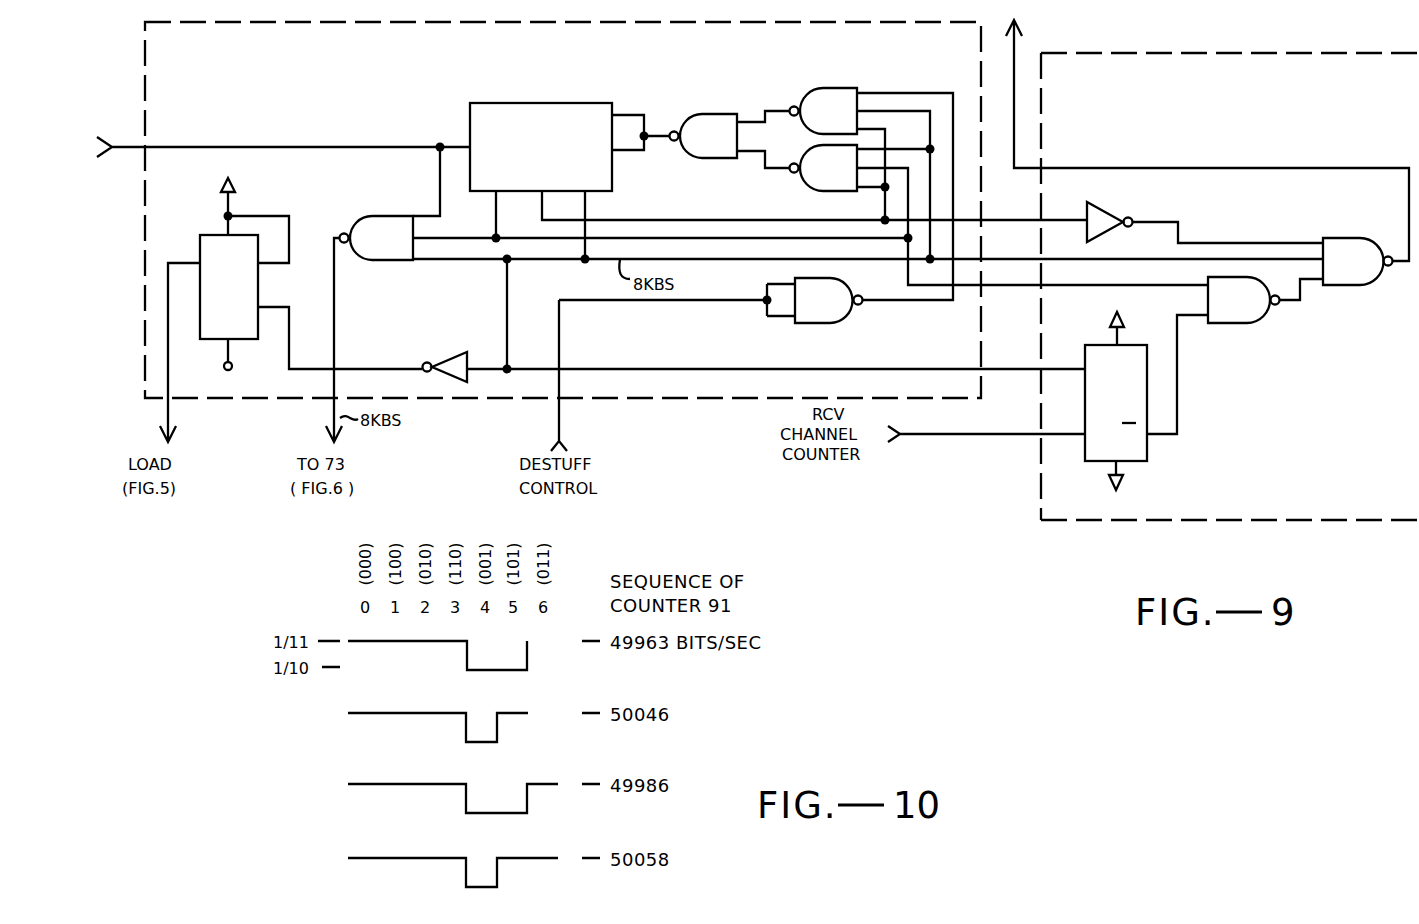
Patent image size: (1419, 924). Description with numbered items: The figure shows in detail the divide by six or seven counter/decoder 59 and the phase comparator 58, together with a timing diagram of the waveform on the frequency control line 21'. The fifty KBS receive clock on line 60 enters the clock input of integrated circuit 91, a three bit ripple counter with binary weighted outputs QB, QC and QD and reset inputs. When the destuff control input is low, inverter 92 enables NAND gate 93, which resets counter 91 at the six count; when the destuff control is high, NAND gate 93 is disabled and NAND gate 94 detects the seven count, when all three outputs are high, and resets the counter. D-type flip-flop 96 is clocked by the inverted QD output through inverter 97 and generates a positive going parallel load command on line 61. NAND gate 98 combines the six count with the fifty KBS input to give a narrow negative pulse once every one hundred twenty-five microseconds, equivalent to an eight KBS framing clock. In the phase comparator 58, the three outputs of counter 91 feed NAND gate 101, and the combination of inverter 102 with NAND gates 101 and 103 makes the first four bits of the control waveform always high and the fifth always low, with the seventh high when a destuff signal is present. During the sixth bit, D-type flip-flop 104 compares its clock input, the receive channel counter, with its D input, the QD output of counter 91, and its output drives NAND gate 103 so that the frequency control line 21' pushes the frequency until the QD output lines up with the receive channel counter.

The divide by 6 or 7 counter/decoder 59 is at (661, 398).
The phase comparator 58 is at (1040, 500).
The 50 KBS receive clock line 60 is at (198, 147).
The parallel load command line 61 is at (168, 408).
The frequency control line 21' is at (1207, 140).
The three bit ripple counter 91 is at (508, 103).
The inverter 92 is at (825, 323).
The NAND gate 93 is at (832, 88).
The NAND gate 94 is at (832, 191).
The D-type flip-flop 96 is at (205, 235).
The inverter 97 is at (443, 361).
The NAND gate 98 is at (389, 216).
The NAND gate 101 is at (1352, 238).
The inverter 102 is at (1116, 183).
The NAND gate 103 is at (1240, 323).
The D-type flip-flop 104 is at (1100, 345).